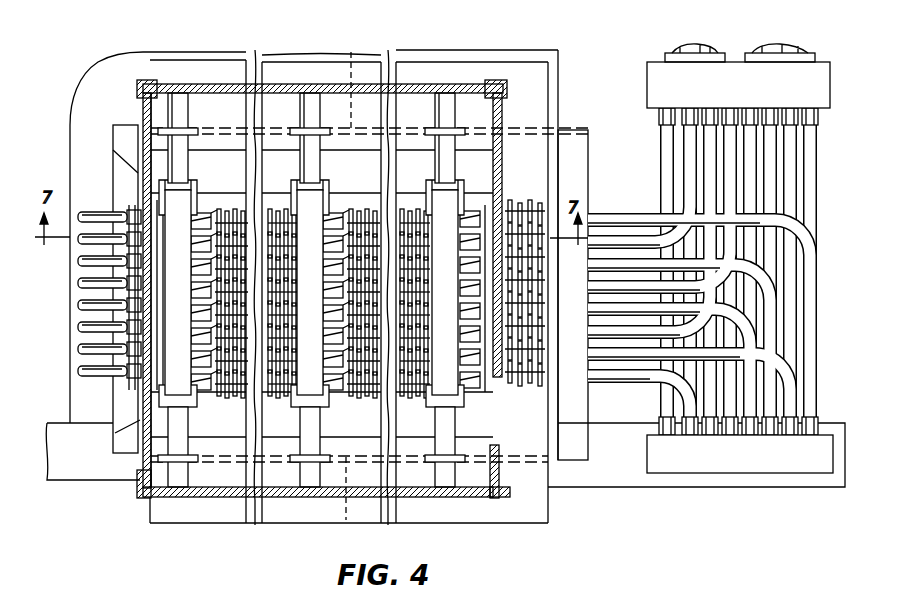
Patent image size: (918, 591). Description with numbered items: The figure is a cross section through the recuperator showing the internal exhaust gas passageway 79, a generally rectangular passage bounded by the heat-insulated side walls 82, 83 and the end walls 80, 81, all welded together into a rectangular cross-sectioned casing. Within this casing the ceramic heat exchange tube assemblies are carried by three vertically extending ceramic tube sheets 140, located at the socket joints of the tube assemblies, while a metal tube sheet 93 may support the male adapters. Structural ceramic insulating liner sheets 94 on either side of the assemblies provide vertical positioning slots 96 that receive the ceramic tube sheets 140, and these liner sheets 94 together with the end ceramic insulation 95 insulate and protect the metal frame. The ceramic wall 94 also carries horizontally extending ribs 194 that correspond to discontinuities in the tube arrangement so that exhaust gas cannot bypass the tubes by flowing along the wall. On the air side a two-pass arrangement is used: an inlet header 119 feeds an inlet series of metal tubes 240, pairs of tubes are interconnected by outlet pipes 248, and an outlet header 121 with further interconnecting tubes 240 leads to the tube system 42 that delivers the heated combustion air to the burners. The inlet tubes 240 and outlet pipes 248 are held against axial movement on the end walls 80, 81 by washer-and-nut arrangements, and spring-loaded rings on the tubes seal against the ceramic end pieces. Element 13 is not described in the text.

The housing frame 13 is at (437, 88).
The tube system 42 is at (762, 48).
The internal exhaust gas passageway 79 is at (400, 205).
The end wall 80 is at (550, 427).
The end wall 81 is at (142, 412).
The side wall 82 is at (351, 40).
The side wall 83 is at (346, 520).
The metal tube sheet 93 is at (492, 387).
The structural ceramic insulating liner sheet 94 is at (375, 202).
The end ceramic insulation 95 is at (158, 378).
The vertical positioning slot 96 is at (200, 192).
The inlet header 119 is at (800, 458).
The outlet header 121 is at (655, 72).
The ceramic tube sheet 140 is at (183, 198).
The horizontally extending rib 194 is at (482, 200).
The inlet metal tube 240 is at (613, 218).
The outlet pipe 248 is at (95, 213).